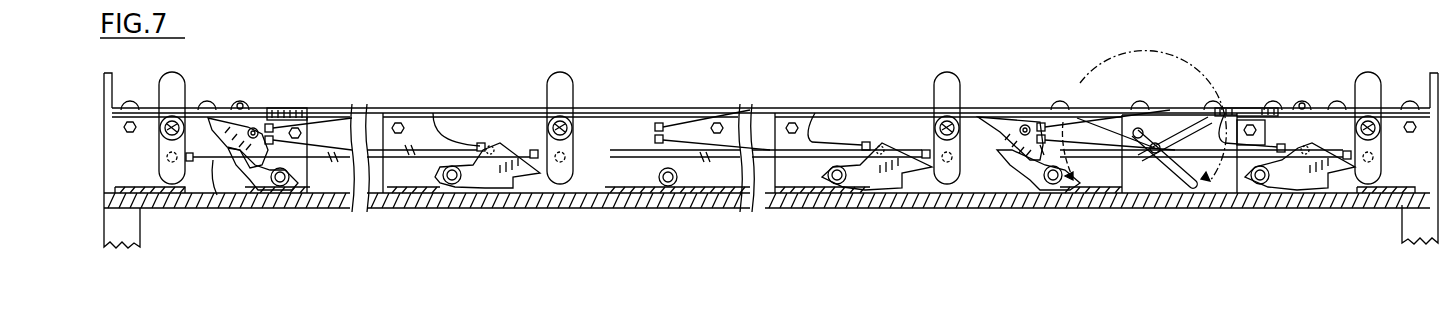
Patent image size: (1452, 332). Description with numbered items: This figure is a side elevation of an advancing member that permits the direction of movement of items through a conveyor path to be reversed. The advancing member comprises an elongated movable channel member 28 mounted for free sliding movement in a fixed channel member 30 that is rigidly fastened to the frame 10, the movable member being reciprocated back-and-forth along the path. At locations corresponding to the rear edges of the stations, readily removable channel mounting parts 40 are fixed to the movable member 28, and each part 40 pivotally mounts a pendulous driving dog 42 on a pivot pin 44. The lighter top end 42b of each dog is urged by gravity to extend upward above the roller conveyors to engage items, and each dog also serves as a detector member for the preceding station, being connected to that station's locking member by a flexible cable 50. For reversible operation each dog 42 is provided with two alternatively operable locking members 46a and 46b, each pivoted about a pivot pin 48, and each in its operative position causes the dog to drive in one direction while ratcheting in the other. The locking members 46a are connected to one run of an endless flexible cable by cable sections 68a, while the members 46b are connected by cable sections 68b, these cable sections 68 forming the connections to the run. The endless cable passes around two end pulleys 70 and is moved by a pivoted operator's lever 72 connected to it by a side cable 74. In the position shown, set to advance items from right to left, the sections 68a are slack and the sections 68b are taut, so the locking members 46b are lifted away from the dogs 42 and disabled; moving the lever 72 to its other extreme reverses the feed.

The frame 10 is at (130, 230).
The movable channel member 28 is at (436, 191).
The fixed channel member 30 is at (610, 204).
The channel mounting part 40 is at (412, 178).
The driving dog 42 is at (174, 90).
The top end of dog 42b is at (945, 75).
The pivot pin 44 is at (548, 120).
The locking member 46a is at (485, 181).
The alternatively operable locking member 46b is at (258, 191).
The pivot pin 48 is at (837, 184).
The flexible cable 50 is at (218, 195).
The cable section 68 is at (493, 109).
The cable section 68a is at (445, 133).
The cable section 68b is at (298, 110).
The end pulley 70 is at (308, 112).
The operator's lever 72 is at (1193, 188).
The side cable 74 is at (1177, 133).